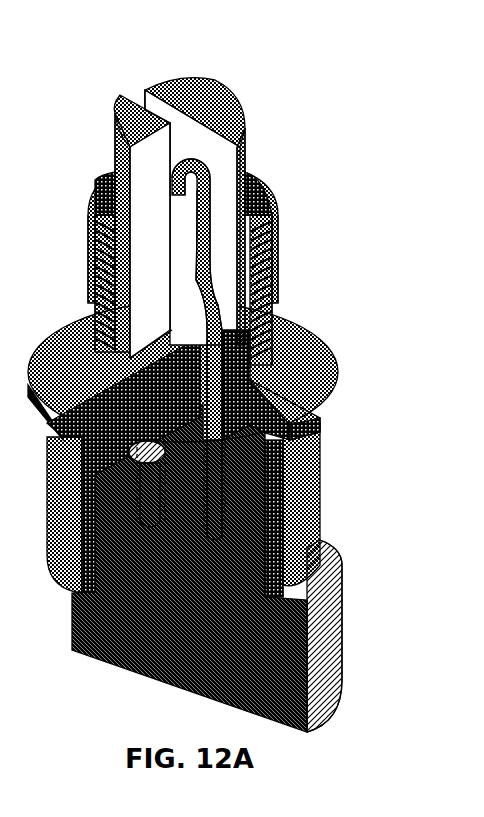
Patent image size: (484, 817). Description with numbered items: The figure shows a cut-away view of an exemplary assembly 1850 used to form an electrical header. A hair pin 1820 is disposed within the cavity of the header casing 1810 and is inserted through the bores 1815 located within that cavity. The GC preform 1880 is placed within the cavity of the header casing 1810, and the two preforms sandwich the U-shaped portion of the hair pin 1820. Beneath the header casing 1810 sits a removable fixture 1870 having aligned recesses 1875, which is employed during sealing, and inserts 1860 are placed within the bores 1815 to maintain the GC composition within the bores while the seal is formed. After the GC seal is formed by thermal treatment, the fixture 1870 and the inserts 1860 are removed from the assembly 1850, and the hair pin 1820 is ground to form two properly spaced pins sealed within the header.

The assembly 1850 is at (343, 73).
The GC preform 1880 is at (148, 88).
The hair pin 1820 is at (207, 205).
The header casing 1810 is at (332, 340).
The bores 1815 is at (240, 387).
The inserts 1860 is at (320, 483).
The recesses 1875 is at (327, 550).
The fixture 1870 is at (342, 645).